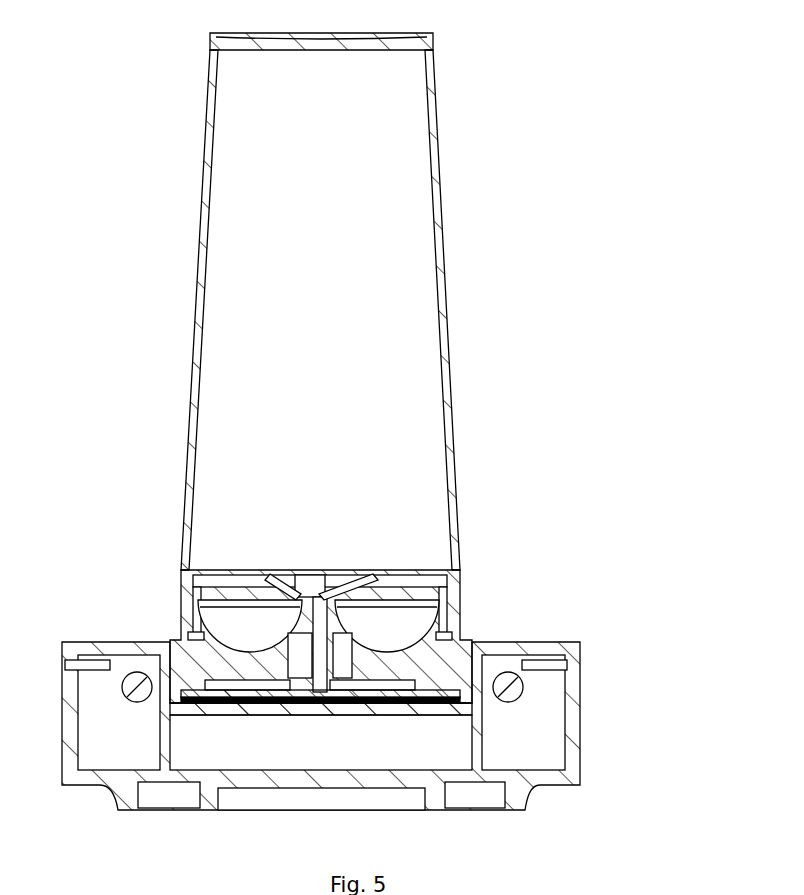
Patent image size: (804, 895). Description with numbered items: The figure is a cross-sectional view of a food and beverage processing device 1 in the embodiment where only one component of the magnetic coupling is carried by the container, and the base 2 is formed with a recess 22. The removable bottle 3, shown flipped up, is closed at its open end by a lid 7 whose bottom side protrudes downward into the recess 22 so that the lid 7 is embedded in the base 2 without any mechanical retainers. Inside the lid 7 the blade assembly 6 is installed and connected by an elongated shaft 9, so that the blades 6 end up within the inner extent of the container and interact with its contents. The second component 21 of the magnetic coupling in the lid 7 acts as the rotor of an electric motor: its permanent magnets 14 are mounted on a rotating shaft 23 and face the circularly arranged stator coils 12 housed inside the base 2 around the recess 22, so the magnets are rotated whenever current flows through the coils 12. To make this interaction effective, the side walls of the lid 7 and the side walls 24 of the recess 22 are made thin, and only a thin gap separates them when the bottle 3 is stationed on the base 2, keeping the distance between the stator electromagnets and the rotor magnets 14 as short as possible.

The food and beverage processing device 1 is at (363, 368).
The base 2 is at (580, 697).
The bottle 3 is at (450, 248).
The blade assembly 6 is at (297, 567).
The lid 7 is at (193, 633).
The shaft 9 is at (347, 640).
The stator coils 12 is at (133, 702).
The permanent magnets 14 is at (218, 708).
The second component of the magnetic coupling 21 is at (410, 662).
The recess 22 is at (403, 705).
The rotating shaft 23 is at (400, 627).
The side walls of the cavity 24 is at (475, 690).